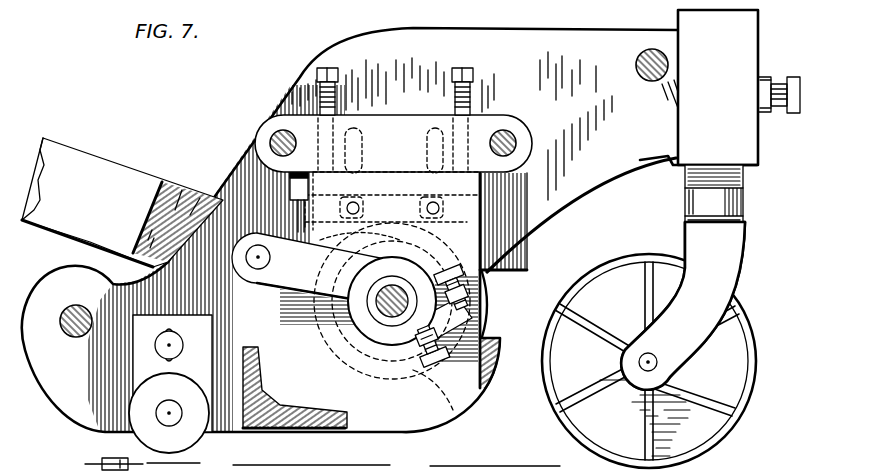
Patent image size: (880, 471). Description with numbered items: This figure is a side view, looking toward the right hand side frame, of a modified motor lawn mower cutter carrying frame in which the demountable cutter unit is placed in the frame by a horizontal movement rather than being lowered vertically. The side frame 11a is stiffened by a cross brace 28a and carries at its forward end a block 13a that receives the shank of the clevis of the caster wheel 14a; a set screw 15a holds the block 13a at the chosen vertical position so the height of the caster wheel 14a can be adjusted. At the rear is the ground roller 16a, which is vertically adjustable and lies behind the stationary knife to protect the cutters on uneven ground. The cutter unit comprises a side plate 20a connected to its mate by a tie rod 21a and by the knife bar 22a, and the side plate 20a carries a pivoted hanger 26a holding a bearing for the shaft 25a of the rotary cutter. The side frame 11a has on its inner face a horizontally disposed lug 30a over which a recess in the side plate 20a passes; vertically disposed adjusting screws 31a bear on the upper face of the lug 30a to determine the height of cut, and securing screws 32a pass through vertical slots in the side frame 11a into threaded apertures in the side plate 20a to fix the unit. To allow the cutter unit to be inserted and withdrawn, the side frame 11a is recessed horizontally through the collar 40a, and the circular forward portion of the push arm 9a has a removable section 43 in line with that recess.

The push arm 9a is at (62, 230).
The side frame 11a is at (588, 47).
The block 13a is at (745, 178).
The caster wheel 14a is at (752, 376).
The set screw 15a is at (796, 76).
The ground roller 16a is at (193, 435).
The side plate 20a is at (403, 118).
The tie rod 21a is at (275, 129).
The knife bar 22a is at (267, 435).
The shaft 25a is at (387, 328).
The pivoted hanger 26a is at (355, 297).
The cross brace 28a is at (670, 58).
The lug 30a is at (297, 188).
The adjusting screw 31a is at (332, 68).
The securing screw 32a is at (427, 207).
The collar 40a is at (483, 468).
The removable section 43 is at (487, 297).